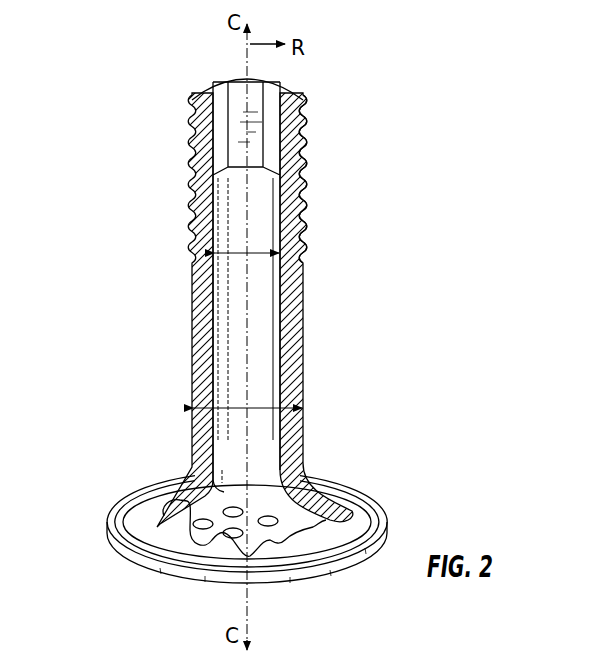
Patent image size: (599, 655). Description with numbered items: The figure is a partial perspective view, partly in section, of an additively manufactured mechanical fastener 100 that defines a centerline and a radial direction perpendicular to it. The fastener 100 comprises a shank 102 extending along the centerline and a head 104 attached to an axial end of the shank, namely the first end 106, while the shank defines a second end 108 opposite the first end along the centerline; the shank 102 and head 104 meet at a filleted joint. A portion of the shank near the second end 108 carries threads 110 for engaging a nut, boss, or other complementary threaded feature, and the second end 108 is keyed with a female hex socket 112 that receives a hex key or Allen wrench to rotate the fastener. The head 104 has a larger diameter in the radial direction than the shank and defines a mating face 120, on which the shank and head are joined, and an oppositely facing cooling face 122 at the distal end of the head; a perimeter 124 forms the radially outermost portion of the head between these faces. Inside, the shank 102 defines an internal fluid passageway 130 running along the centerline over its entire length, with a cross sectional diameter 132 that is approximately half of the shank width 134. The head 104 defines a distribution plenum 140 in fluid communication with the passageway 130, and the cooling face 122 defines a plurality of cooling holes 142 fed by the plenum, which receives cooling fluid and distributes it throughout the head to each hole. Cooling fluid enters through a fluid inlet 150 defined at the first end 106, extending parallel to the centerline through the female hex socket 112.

The fastener 100 is at (463, 76).
The shank 102 is at (305, 339).
The head 104 is at (381, 492).
The first end 106 is at (189, 467).
The second end 108 is at (189, 89).
The threads 110 is at (304, 170).
The female hex socket 112 is at (216, 110).
The mating face 120 is at (339, 490).
The cooling face 122 is at (349, 574).
The perimeter 124 is at (108, 526).
The internal fluid passageway 130 is at (234, 342).
The cross sectional diameter 132 is at (256, 252).
The shank width 134 is at (258, 407).
The distribution plenum 140 is at (197, 509).
The cooling holes 142 is at (272, 537).
The fluid inlet 150 is at (237, 73).